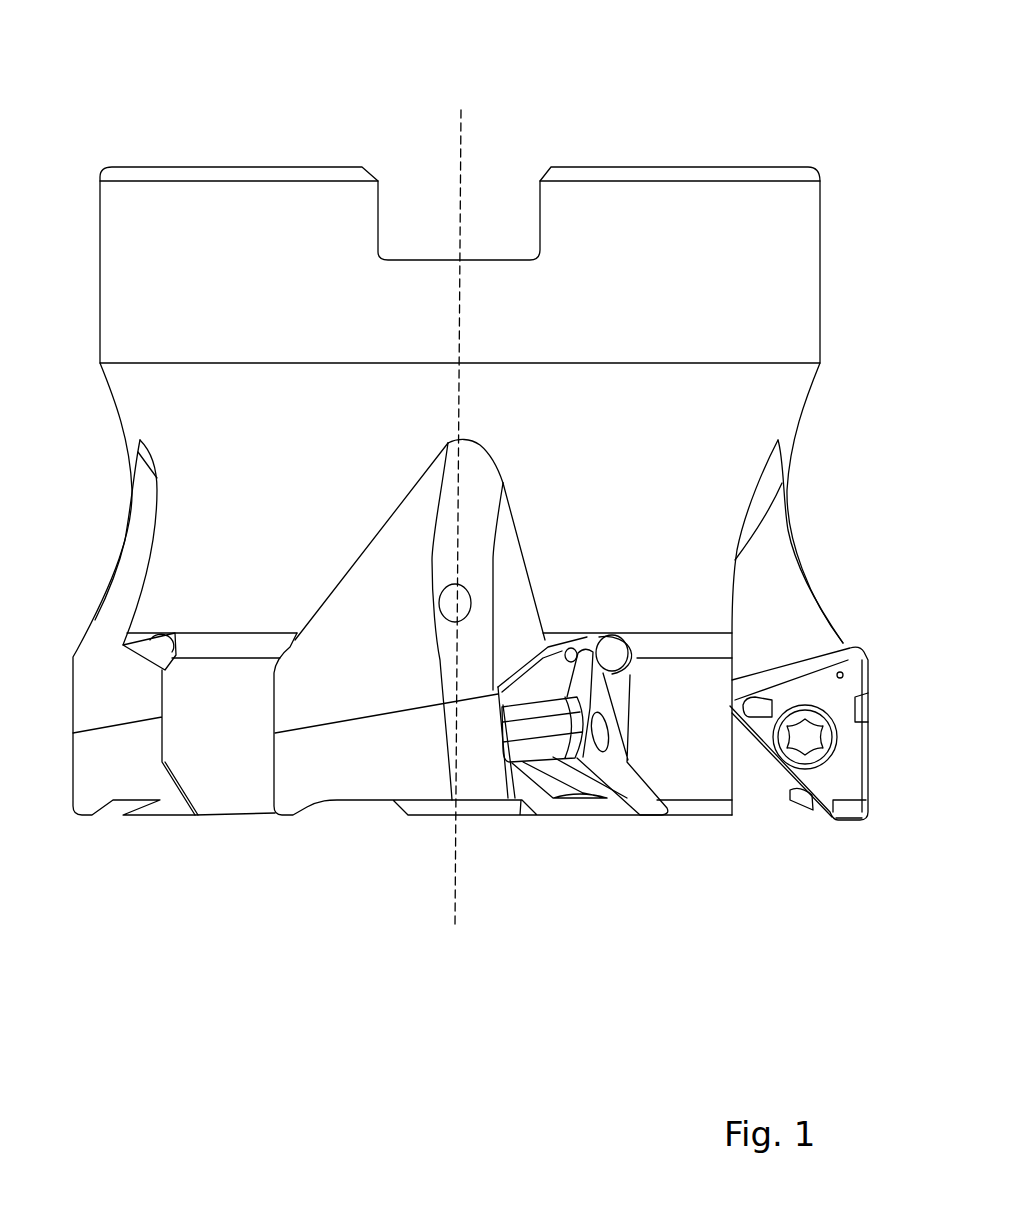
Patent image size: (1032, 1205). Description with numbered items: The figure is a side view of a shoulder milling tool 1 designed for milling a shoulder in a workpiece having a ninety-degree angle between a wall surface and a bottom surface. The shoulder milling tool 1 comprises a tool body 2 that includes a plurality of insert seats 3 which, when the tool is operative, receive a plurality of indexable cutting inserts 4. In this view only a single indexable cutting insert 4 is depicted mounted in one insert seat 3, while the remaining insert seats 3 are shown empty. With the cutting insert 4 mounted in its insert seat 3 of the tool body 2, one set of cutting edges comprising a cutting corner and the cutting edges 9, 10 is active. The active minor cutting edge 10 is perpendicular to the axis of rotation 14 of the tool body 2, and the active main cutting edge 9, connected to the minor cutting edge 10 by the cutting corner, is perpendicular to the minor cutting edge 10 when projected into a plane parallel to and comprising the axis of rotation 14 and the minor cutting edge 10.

The shoulder milling tool 1 is at (776, 128).
The tool body 2 is at (140, 258).
The insert seat 3 is at (582, 828).
The indexable cutting insert 4 is at (833, 770).
The main cutting edge 9 is at (873, 722).
The minor cutting edge 10 is at (848, 820).
The axis of rotation 14 is at (462, 148).